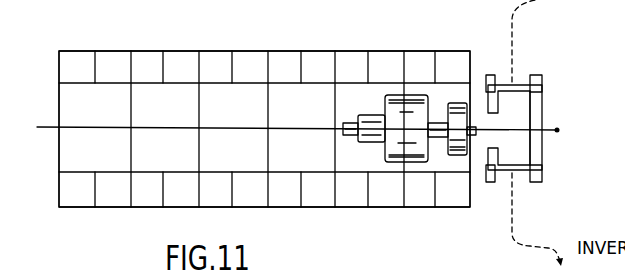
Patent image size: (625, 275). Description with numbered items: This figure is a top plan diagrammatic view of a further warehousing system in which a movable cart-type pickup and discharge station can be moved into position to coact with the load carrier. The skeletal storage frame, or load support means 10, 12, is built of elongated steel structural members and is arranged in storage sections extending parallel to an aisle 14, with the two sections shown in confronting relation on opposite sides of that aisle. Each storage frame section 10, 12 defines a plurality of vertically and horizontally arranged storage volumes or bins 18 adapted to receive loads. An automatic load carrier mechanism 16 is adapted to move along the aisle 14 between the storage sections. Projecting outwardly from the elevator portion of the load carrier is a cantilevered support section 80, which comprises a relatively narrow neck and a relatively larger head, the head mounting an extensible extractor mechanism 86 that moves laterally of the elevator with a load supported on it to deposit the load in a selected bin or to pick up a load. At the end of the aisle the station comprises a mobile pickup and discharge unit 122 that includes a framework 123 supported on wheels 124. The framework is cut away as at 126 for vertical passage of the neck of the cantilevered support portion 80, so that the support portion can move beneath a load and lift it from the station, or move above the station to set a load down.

The storage frame section 10 is at (316, 50).
The storage frame section 12 is at (319, 214).
The aisle 14 is at (240, 107).
The automatic load carrier mechanism 16 is at (418, 88).
The storage bins 18 is at (150, 55).
The cantilevered support section 80 is at (433, 122).
The extensible extractor mechanism 86 is at (462, 103).
The mobile pickup and discharge unit 122 is at (545, 116).
The framework 123 is at (536, 151).
The wheels 124 is at (489, 74).
The cutaway 126 is at (490, 132).